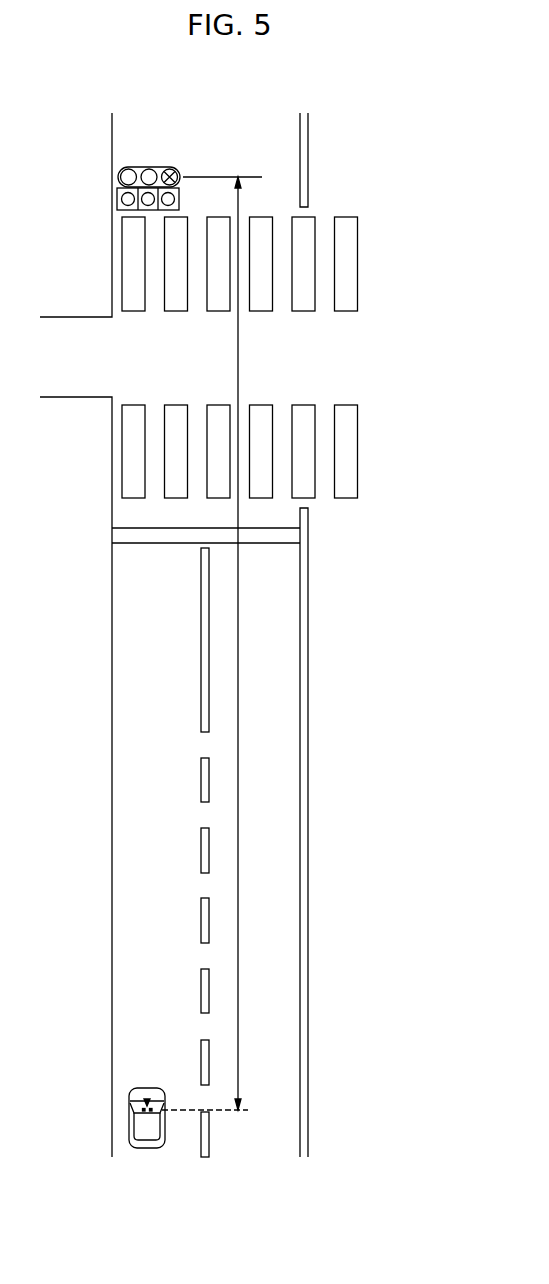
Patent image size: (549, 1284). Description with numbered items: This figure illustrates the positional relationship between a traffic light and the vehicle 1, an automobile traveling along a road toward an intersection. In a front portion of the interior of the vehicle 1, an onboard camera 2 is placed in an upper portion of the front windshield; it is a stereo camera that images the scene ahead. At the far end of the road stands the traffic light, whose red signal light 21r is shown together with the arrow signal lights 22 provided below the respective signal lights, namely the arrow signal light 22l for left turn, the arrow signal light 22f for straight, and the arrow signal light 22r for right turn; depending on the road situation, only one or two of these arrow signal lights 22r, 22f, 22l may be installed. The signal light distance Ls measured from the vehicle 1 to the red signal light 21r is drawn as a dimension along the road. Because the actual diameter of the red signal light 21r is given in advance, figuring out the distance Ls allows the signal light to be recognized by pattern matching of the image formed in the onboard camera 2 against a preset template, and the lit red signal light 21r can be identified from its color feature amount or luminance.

The vehicle 1 is at (129, 1127).
The onboard camera 2 is at (146, 1098).
The red signal light 21r is at (174, 170).
The arrow signal lights 22 is at (137, 184).
The arrow signal light for left turn 22l is at (121, 199).
The arrow signal light for straight 22f is at (147, 206).
The arrow signal light for right turn 22r is at (175, 199).
The signal light distance Ls is at (212, 643).